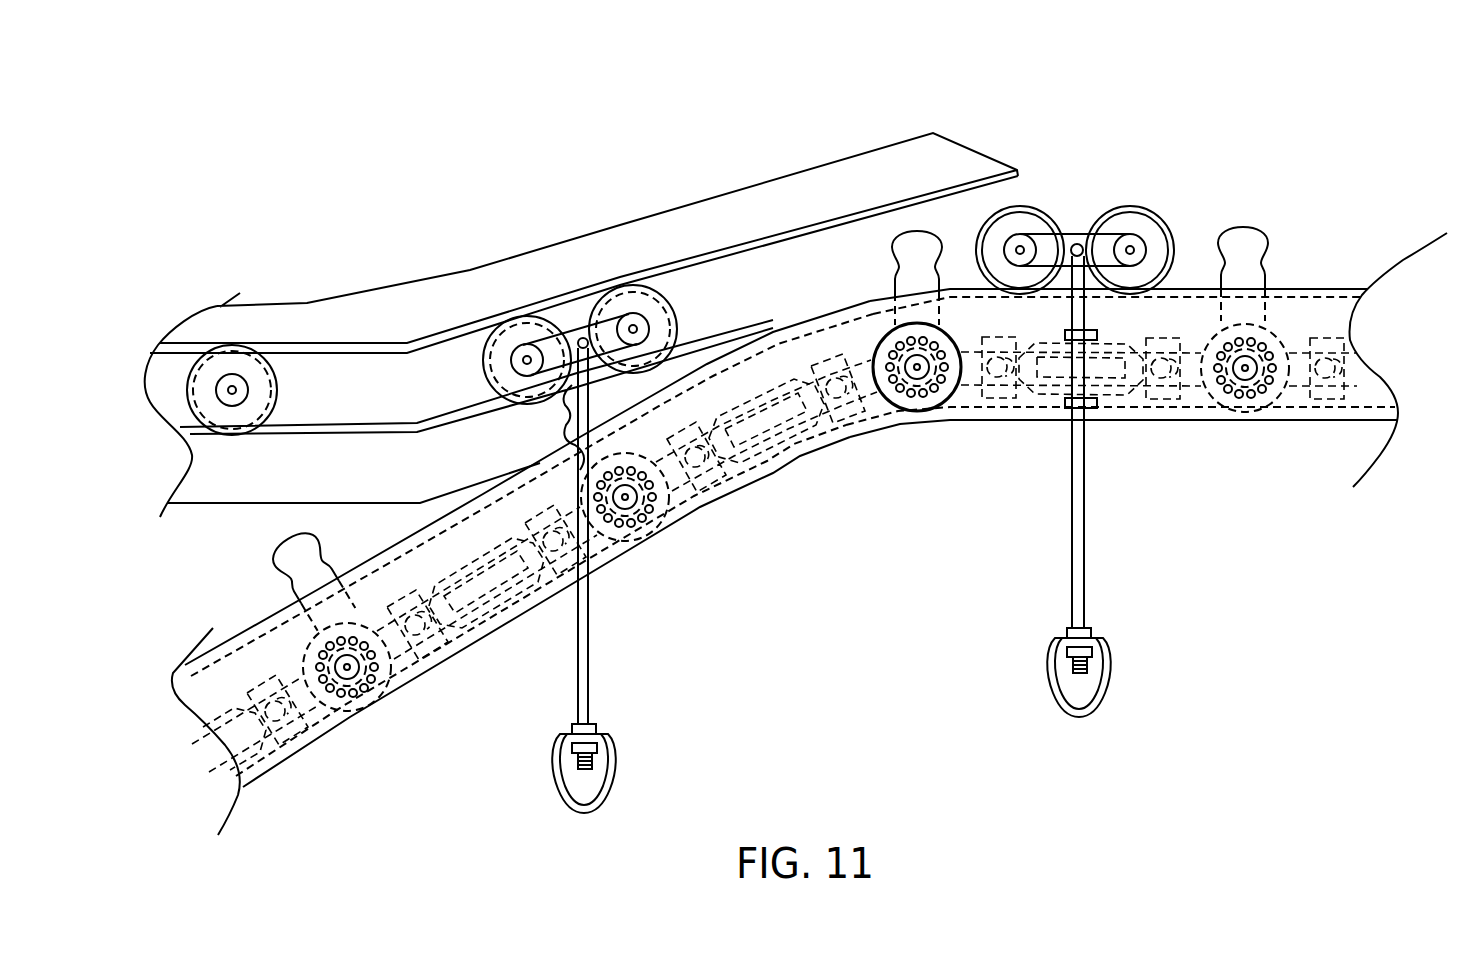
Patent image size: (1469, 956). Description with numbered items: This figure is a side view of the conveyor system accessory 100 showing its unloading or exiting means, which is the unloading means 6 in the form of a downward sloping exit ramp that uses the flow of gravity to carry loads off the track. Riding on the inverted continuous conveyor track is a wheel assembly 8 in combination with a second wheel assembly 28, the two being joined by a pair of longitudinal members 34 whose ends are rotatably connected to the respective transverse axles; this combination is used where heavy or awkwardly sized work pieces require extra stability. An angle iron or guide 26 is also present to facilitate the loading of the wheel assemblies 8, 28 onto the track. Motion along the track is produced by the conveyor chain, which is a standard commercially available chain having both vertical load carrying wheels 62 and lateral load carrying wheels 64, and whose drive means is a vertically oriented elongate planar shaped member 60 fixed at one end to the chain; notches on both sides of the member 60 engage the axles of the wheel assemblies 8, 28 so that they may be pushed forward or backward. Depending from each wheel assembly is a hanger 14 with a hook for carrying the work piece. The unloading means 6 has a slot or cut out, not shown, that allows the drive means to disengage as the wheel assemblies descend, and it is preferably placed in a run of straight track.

The conveyor system 100 is at (433, 192).
The unloading means 6 is at (343, 422).
The angle iron or guide 26 is at (852, 157).
The wheel assembly 8 is at (1028, 220).
The second wheel assembly 28 is at (1150, 227).
The longitudinal members 34 is at (1077, 243).
The vertically oriented elongate planar shaped member 60 is at (1250, 240).
The vertical load carrying wheels 62 is at (953, 426).
The lateral load carrying wheels 64 is at (778, 466).
The suspension rod with hook 14 is at (1085, 452).